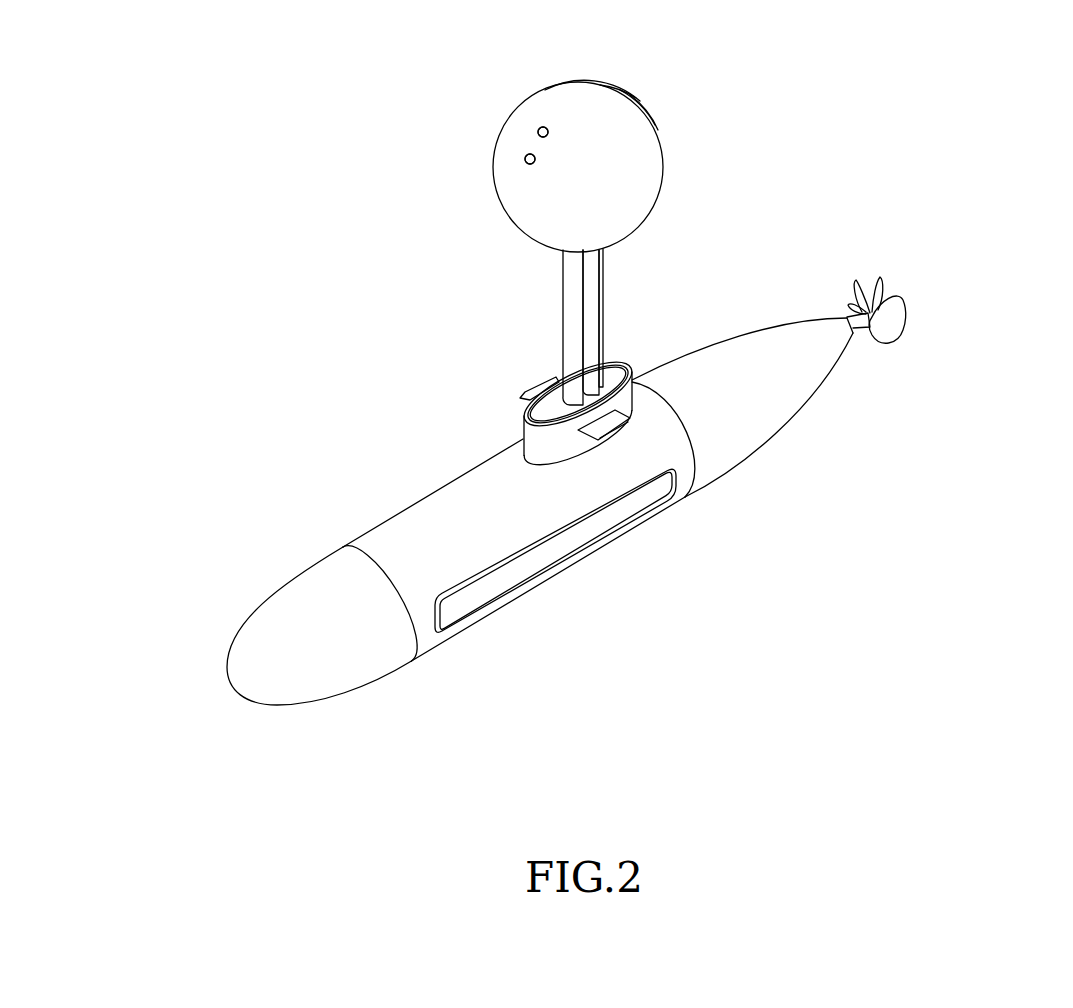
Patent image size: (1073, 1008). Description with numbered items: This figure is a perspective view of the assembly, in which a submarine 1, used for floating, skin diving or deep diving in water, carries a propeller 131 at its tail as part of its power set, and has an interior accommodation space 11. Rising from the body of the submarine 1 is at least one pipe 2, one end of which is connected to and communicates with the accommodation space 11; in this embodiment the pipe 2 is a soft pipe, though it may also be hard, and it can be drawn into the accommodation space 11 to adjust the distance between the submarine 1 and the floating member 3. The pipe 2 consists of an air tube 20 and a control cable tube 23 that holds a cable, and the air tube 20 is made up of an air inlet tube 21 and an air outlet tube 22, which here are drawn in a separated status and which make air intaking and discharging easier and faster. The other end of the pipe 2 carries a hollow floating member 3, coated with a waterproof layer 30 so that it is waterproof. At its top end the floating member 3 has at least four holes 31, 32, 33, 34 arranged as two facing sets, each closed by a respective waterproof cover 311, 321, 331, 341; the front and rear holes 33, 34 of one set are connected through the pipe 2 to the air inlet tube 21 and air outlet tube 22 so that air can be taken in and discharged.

The submarine 1 is at (277, 640).
The accommodation space 11 is at (758, 407).
The propeller 131 is at (892, 307).
The pipe 2 is at (740, 252).
The air tube 20 is at (477, 258).
The air inlet tube 21 is at (570, 329).
The air outlet tube 22 is at (592, 290).
The control cable tube 23 is at (600, 348).
The floating member 3 is at (375, 165).
The waterproof layer 30 is at (633, 235).
The hole 31 is at (540, 127).
The waterproof cover 311 is at (538, 130).
The hole 32 is at (613, 82).
The waterproof cover 321 is at (620, 90).
The hole 33 is at (525, 157).
The waterproof cover 331 is at (527, 165).
The hole 34 is at (636, 100).
The waterproof cover 341 is at (640, 100).